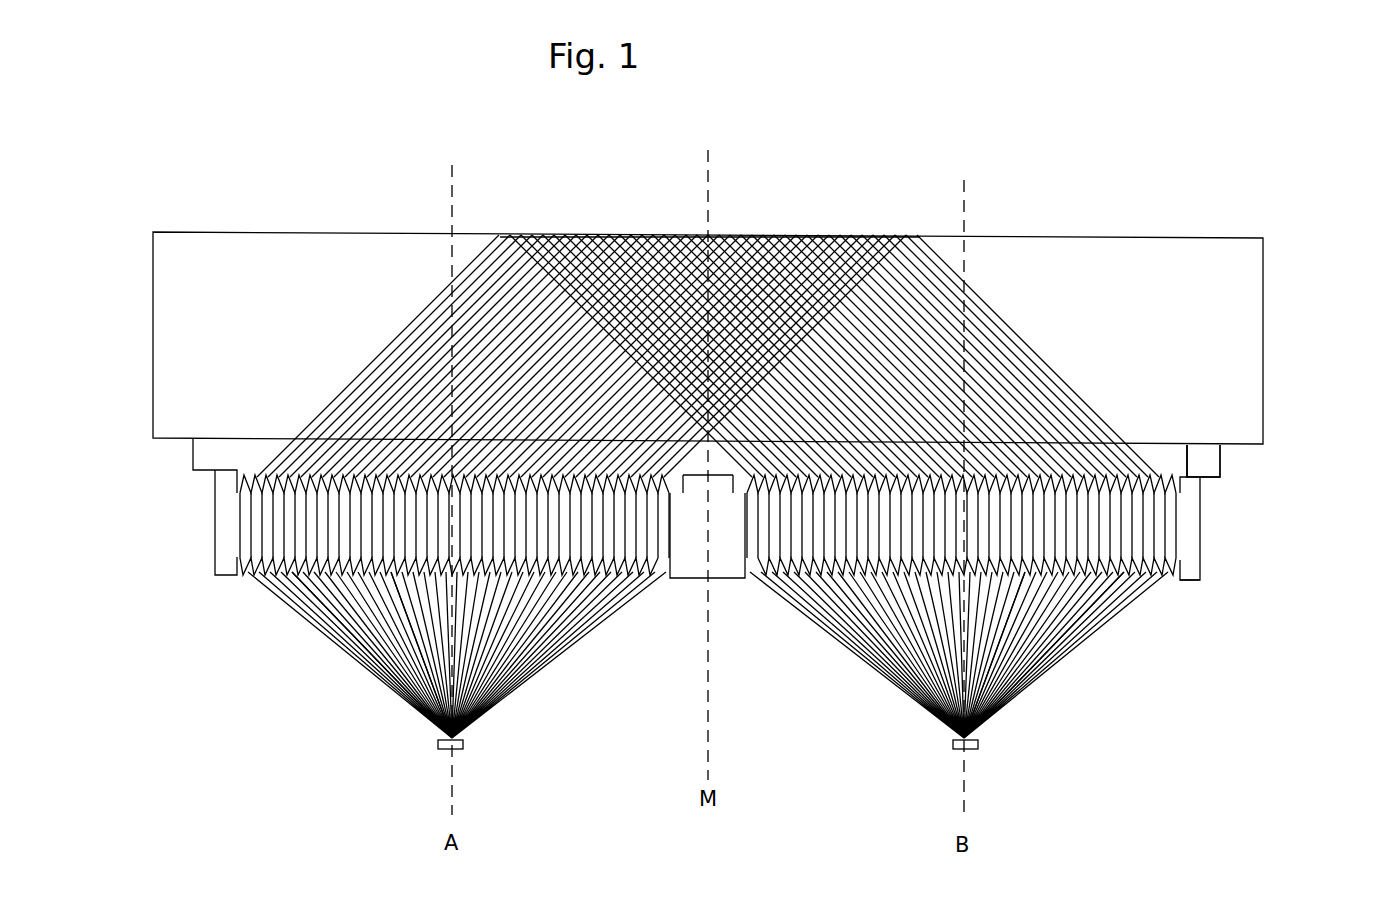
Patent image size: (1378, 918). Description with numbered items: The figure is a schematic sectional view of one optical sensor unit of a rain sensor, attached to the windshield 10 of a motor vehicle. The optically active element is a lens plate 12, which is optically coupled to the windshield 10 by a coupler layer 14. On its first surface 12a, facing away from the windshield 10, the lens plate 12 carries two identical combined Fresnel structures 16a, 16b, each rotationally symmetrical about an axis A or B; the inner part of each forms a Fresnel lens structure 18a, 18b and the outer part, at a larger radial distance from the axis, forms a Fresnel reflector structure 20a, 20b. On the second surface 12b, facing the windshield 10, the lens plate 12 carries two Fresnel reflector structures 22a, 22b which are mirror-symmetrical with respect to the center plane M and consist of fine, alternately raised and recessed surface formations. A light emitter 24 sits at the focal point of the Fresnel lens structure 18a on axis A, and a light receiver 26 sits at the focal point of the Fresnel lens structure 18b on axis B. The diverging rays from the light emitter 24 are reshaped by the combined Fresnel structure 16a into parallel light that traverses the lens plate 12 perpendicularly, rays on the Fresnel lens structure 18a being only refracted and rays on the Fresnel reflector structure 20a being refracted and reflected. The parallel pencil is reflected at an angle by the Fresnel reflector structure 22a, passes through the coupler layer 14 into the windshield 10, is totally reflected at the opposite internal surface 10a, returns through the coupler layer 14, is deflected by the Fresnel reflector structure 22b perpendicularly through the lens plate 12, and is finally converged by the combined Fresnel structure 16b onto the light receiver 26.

The windshield 10 is at (1248, 330).
The opposite internal surface 10a is at (1062, 239).
The lens plate 12 is at (1190, 532).
The first surface 12a is at (1190, 582).
The second surface 12b is at (1188, 477).
The coupler layer 14 is at (1210, 467).
The combined Fresnel structure 16a is at (518, 585).
The combined Fresnel structure 16b is at (898, 585).
The Fresnel lens structure 18a is at (397, 572).
The Fresnel lens structure 18b is at (1020, 572).
The Fresnel reflector structure 20a is at (300, 592).
The Fresnel reflector structure 20b is at (1118, 592).
The Fresnel reflector structure 22a is at (389, 467).
The Fresnel reflector structure 22b is at (1020, 469).
The light emitter 24 is at (437, 747).
The light receiver 26 is at (950, 748).